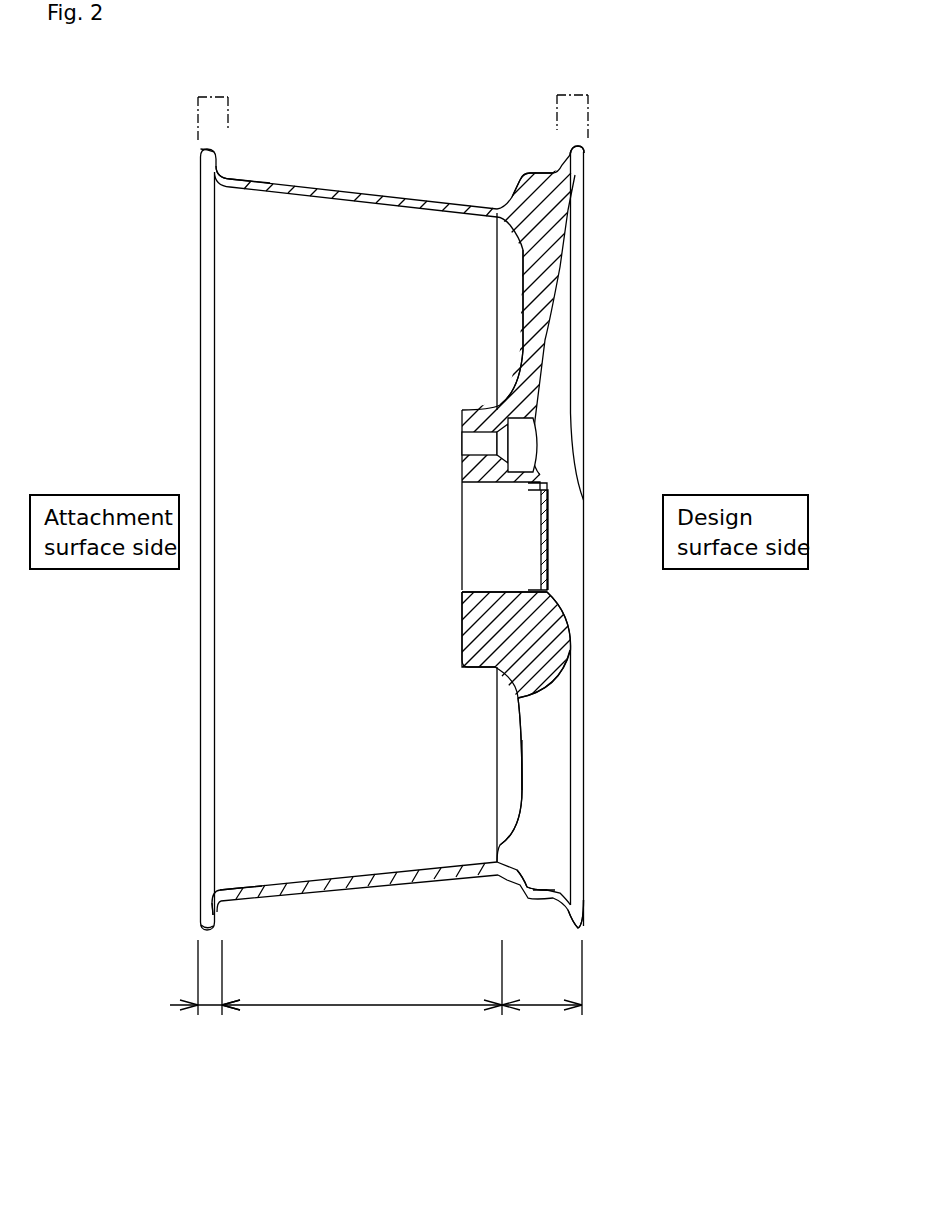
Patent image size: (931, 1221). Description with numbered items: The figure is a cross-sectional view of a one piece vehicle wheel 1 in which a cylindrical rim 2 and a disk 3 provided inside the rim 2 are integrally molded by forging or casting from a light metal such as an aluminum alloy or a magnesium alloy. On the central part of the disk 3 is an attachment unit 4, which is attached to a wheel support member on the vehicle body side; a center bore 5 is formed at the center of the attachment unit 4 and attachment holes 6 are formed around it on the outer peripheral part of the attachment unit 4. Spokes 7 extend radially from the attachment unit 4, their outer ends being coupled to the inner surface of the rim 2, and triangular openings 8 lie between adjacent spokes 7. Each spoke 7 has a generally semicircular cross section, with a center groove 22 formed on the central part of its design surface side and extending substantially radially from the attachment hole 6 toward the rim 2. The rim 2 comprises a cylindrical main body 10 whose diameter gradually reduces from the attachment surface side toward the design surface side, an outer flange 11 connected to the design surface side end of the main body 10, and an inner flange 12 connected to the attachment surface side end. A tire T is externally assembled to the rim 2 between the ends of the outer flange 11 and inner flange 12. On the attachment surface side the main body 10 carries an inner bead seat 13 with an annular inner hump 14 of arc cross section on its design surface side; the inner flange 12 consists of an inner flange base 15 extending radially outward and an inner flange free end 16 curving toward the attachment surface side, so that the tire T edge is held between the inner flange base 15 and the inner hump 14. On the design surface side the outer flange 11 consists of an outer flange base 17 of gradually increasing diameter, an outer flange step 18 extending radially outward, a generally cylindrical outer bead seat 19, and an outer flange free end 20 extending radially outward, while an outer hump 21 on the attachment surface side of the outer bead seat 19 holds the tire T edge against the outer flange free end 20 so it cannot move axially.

The vehicle wheel 1 is at (694, 248).
The rim 2 is at (441, 160).
The disk 3 is at (609, 497).
The attachment unit 4 is at (550, 624).
The center bore 5 is at (482, 591).
The attachment hole 6 is at (462, 444).
The spoke 7 is at (525, 305).
The triangular opening 8 is at (540, 722).
The main body 10 is at (387, 190).
The outer flange 11 is at (540, 1008).
The inner flange 12 is at (208, 1008).
The inner bead seat 13 is at (232, 173).
The inner hump 14 is at (265, 178).
The inner flange base 15 is at (236, 176).
The inner flange free end 16 is at (203, 151).
The outer flange base 17 is at (500, 232).
The outer flange step 18 is at (527, 182).
The outer bead seat 19 is at (533, 172).
The outer flange free end 20 is at (587, 147).
The outer hump 21 is at (527, 900).
The center groove 22 is at (555, 352).
The tire T is at (193, 108).